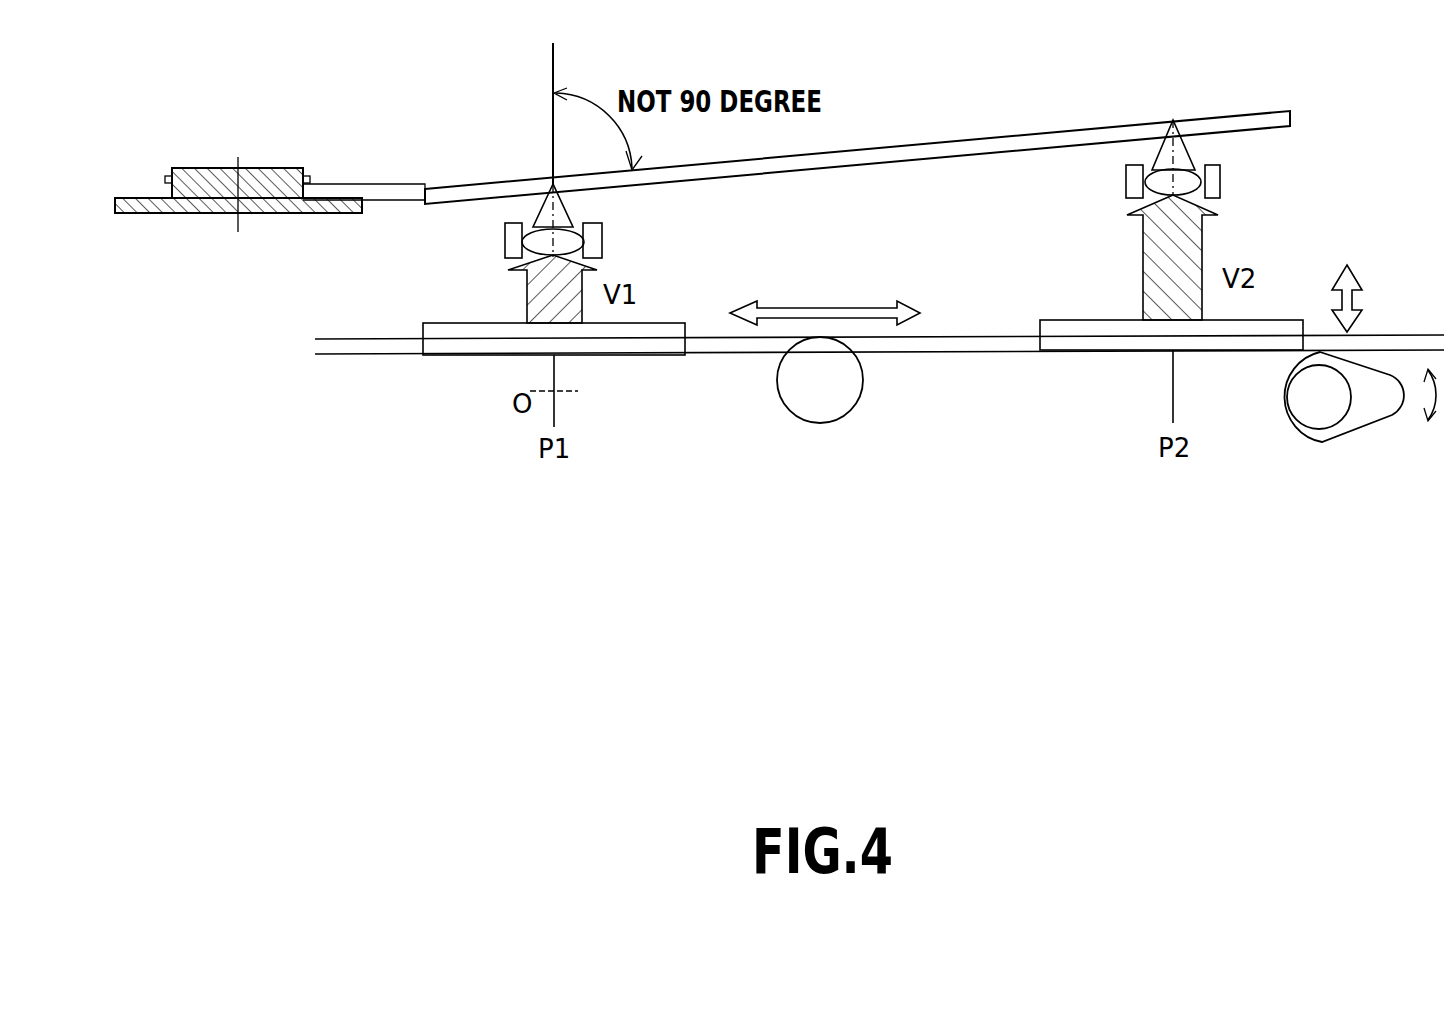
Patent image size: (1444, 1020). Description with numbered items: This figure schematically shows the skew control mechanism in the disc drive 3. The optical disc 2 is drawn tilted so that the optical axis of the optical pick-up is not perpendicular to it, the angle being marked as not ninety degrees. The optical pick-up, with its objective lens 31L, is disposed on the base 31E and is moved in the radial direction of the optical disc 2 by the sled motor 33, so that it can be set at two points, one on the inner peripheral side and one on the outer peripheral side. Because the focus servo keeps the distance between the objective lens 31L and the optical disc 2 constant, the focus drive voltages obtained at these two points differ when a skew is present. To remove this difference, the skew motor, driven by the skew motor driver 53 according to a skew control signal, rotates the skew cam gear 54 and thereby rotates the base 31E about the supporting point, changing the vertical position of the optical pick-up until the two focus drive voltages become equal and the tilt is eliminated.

The optical disc 2 is at (966, 141).
The disc drive 3 is at (984, 354).
The objective lens 31L is at (580, 244).
The base 31E is at (449, 322).
The sled motor 33 is at (817, 413).
The skew motor driver 53 is at (1310, 413).
The skew cam gear 54 is at (1380, 412).